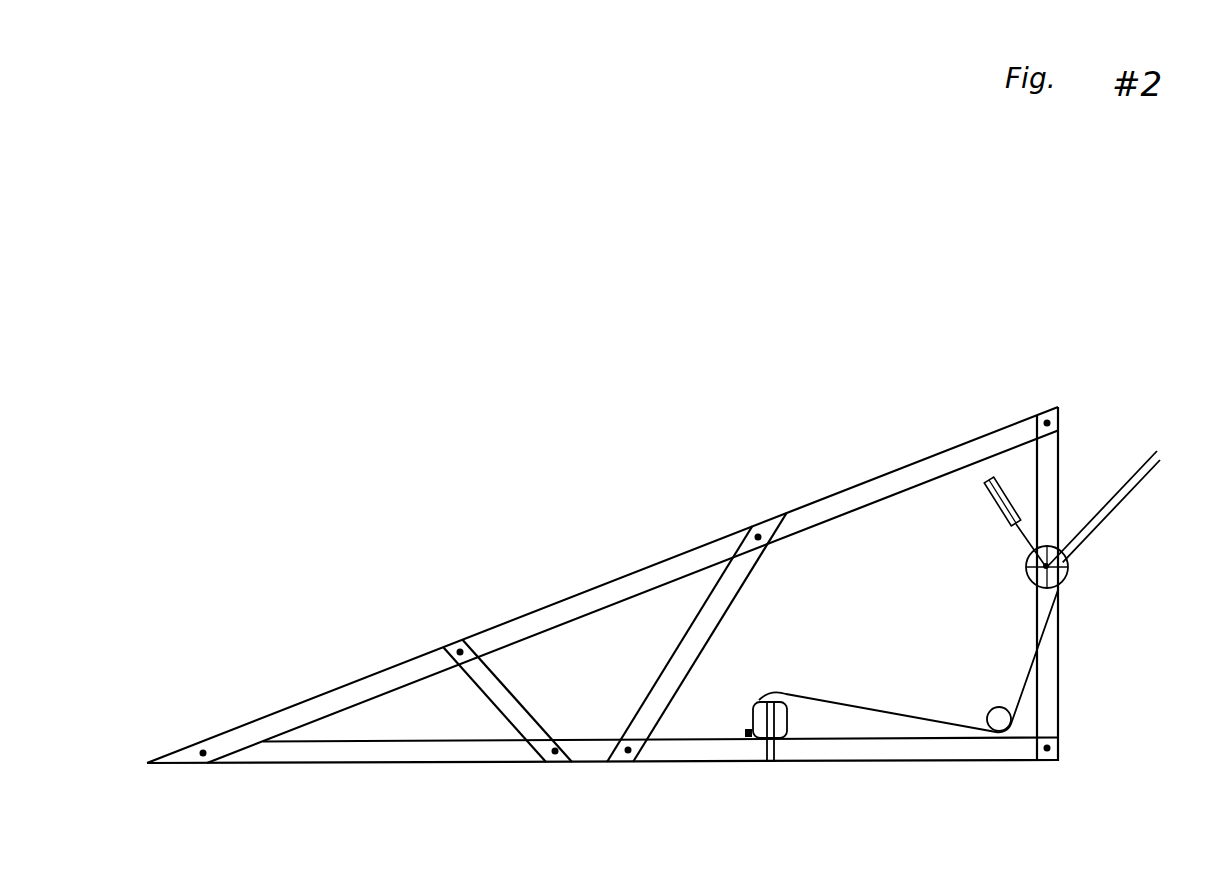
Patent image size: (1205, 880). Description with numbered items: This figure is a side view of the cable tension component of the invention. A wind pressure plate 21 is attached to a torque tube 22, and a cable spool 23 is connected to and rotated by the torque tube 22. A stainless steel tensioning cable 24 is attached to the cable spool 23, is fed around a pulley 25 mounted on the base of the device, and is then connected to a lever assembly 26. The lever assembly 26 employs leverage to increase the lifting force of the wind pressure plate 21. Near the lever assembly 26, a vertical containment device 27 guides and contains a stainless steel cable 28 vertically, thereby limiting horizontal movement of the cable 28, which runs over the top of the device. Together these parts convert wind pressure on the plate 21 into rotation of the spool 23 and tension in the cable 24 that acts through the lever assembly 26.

The wind pressure plate 21 is at (985, 522).
The torque tube 22 is at (1107, 517).
The cable spool 23 is at (1068, 575).
The tensioning cable 24 is at (908, 661).
The pulley 25 is at (970, 705).
The lever assembly 26 is at (809, 751).
The vertical containment device 27 is at (752, 712).
The stainless steel cable 28 is at (723, 765).